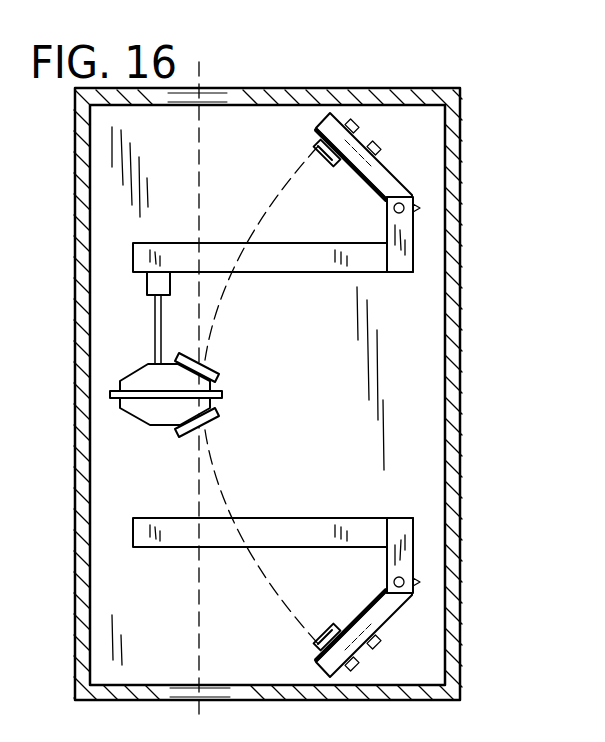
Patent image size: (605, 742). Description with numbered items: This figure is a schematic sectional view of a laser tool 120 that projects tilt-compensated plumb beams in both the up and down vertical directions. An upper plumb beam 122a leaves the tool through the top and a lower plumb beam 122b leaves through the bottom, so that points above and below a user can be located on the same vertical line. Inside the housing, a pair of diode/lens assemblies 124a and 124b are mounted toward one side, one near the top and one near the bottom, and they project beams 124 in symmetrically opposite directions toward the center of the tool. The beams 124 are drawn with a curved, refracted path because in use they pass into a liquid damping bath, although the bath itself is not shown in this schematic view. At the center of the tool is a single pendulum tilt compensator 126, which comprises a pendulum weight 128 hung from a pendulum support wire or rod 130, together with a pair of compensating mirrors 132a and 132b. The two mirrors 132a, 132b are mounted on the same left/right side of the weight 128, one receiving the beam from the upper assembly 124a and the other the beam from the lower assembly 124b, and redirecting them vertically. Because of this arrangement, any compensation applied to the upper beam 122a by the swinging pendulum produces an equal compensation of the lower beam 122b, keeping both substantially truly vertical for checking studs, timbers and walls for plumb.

The laser tool 120 is at (460, 344).
The upper plumb beam 122a is at (203, 78).
The lower plumb beam 122b is at (203, 712).
The beams 124 is at (218, 310).
The diode/lens assembly 124a is at (300, 140).
The diode/lens assembly 124b is at (298, 646).
The single pendulum tilt compensator 126 is at (275, 360).
The pendulum weight 128 is at (140, 417).
The pendulum support wire or rod 130 is at (153, 318).
The compensating mirror 132a is at (219, 377).
The compensating mirror 132b is at (219, 418).